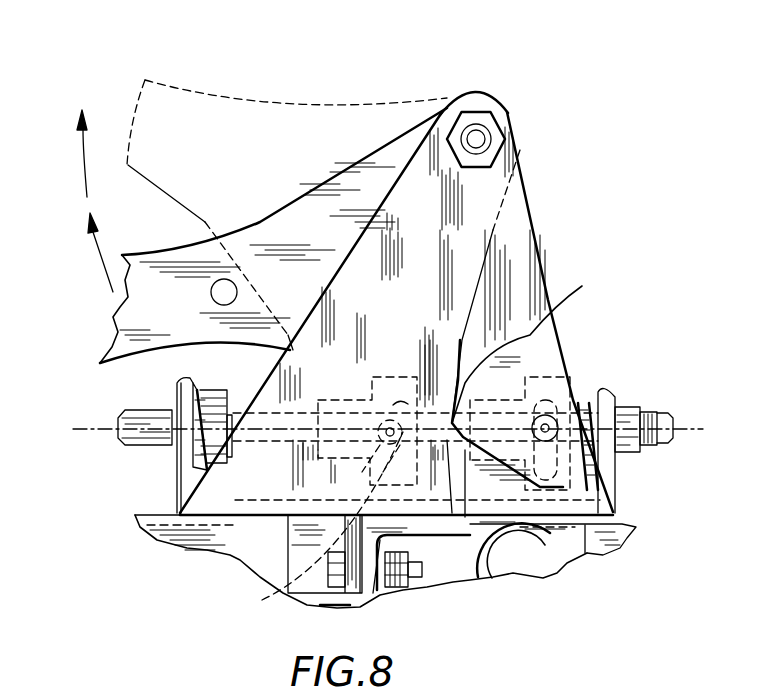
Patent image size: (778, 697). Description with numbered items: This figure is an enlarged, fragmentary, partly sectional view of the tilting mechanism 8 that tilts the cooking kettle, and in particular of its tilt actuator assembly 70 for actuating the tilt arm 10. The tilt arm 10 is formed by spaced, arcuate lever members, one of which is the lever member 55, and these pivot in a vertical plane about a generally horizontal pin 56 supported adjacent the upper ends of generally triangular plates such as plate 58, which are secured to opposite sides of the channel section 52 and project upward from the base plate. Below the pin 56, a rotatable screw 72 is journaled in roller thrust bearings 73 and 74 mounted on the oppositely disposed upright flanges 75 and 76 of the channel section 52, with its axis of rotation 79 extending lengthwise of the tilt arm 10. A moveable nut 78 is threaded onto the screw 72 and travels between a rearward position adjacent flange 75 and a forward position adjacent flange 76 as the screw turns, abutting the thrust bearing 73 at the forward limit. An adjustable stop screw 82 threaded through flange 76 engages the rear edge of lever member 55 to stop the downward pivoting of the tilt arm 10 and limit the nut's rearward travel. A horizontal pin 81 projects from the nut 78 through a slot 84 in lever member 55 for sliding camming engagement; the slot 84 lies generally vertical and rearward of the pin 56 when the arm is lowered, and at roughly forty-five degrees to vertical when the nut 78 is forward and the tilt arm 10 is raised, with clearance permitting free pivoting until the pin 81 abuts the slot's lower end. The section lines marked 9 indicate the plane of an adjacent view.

The tilting mechanism 8 is at (550, 181).
The section line 9- 9 is at (165, 42).
The tilt arm 10 is at (227, 85).
The channel section 52 is at (233, 516).
The lever member 55 is at (528, 344).
The pin 56 is at (480, 130).
The plate 58 is at (430, 188).
The tilt actuator assembly 70 is at (490, 386).
The rotatable screw 72 is at (465, 517).
The roller thrust bearing 73 is at (215, 395).
The roller thrust bearing 74 is at (578, 403).
The flange 75 is at (188, 480).
The flange 76 is at (598, 403).
The moveable nut 78 is at (540, 378).
The axis of rotation 79 is at (96, 432).
The pin 81 is at (652, 497).
The adjustable stop screw 82 is at (618, 445).
The slot 84 is at (405, 395).